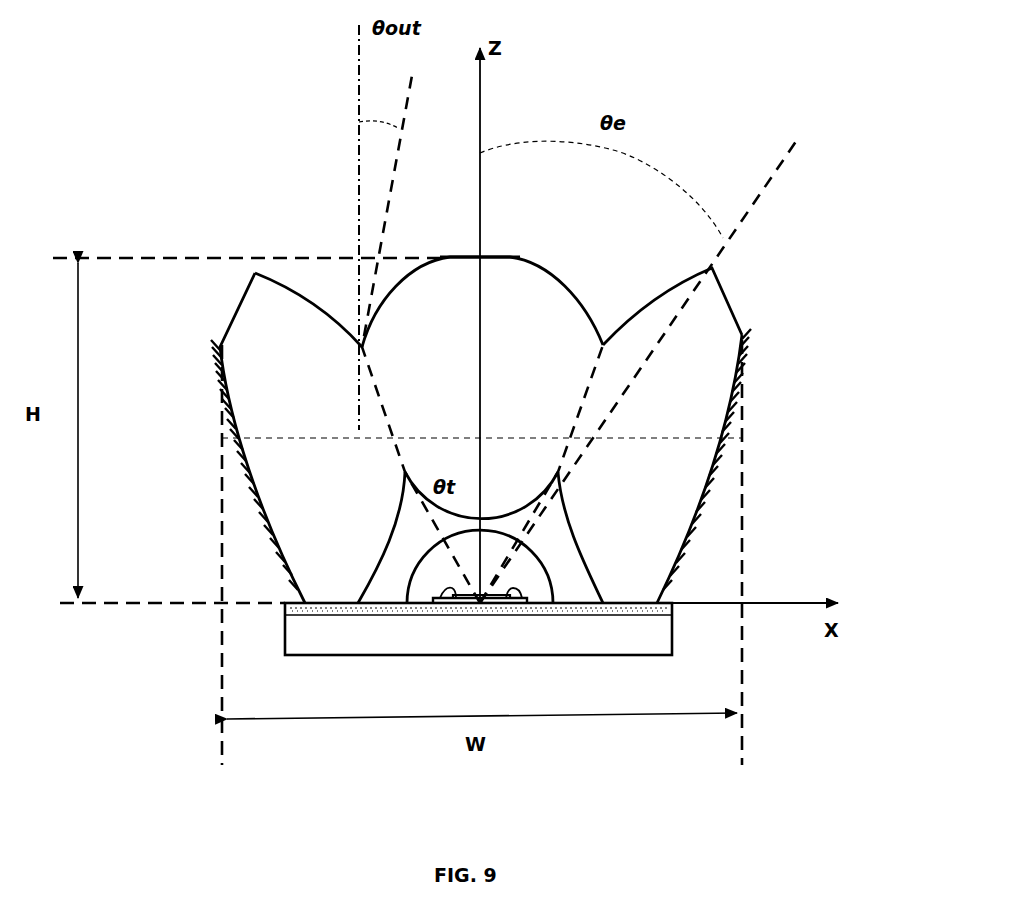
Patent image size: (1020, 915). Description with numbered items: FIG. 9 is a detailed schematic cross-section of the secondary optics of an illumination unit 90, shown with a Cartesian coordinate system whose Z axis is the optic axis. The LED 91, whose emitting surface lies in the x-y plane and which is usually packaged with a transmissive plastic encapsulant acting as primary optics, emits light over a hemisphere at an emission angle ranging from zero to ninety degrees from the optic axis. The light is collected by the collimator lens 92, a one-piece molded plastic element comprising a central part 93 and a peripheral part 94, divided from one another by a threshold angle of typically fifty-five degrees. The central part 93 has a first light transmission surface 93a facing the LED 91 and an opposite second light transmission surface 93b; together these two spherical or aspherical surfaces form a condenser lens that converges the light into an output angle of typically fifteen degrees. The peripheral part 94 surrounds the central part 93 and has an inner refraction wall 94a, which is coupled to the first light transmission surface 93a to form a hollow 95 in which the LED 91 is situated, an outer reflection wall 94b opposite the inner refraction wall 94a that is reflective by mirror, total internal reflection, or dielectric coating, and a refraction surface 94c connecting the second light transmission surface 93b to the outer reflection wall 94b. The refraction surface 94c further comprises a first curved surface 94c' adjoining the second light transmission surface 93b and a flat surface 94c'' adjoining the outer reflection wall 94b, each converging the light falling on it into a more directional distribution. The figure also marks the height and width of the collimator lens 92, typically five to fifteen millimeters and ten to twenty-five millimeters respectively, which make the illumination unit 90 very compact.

The illumination unit 90 is at (846, 34).
The LED 91 is at (507, 571).
The collimator lens 92 is at (778, 333).
The central part 93 is at (408, 371).
The first light transmission surface 93a is at (425, 498).
The second light transmission surface 93b is at (565, 281).
The peripheral part 94 is at (683, 480).
The inner refraction wall 94a is at (588, 570).
The outer reflection wall 94b is at (742, 400).
The refraction surface 94c is at (695, 306).
The first curved surface 94c' is at (308, 221).
The flat surface 94c'' is at (237, 381).
The hollow 95 is at (418, 548).